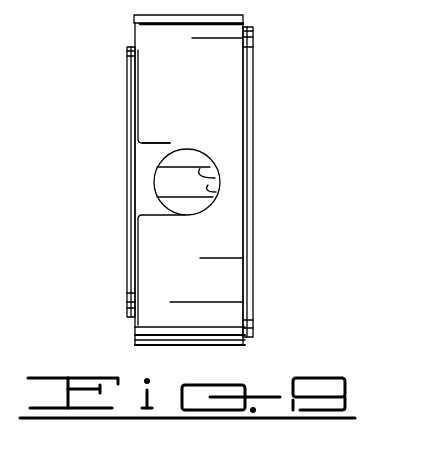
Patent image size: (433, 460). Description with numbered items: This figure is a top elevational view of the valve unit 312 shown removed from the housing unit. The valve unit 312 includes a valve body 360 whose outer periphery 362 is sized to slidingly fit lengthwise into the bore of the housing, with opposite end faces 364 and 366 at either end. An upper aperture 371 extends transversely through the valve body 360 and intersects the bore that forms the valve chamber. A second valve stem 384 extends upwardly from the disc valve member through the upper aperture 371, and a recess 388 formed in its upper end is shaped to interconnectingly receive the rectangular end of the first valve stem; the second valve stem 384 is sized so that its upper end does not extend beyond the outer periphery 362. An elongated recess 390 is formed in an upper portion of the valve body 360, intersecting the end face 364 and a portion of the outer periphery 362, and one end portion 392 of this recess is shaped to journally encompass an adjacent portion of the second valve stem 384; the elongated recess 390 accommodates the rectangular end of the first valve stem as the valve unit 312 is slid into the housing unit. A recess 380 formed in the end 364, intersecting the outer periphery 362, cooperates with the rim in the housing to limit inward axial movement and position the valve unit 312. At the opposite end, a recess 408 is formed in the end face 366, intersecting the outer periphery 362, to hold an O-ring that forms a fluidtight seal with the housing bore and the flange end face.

The valve unit 312 is at (240, 6).
The end face 366 is at (253, 78).
The recess 408 is at (250, 125).
The end face 364 is at (128, 262).
The outer periphery 362 is at (236, 347).
The recess 380 is at (136, 60).
The elongated recess 390 is at (146, 149).
The second valve stem 384 is at (197, 158).
The recess 388 is at (215, 178).
The end portion 392 is at (216, 192).
The upper aperture 371 is at (186, 206).
The valve body 360 is at (232, 280).